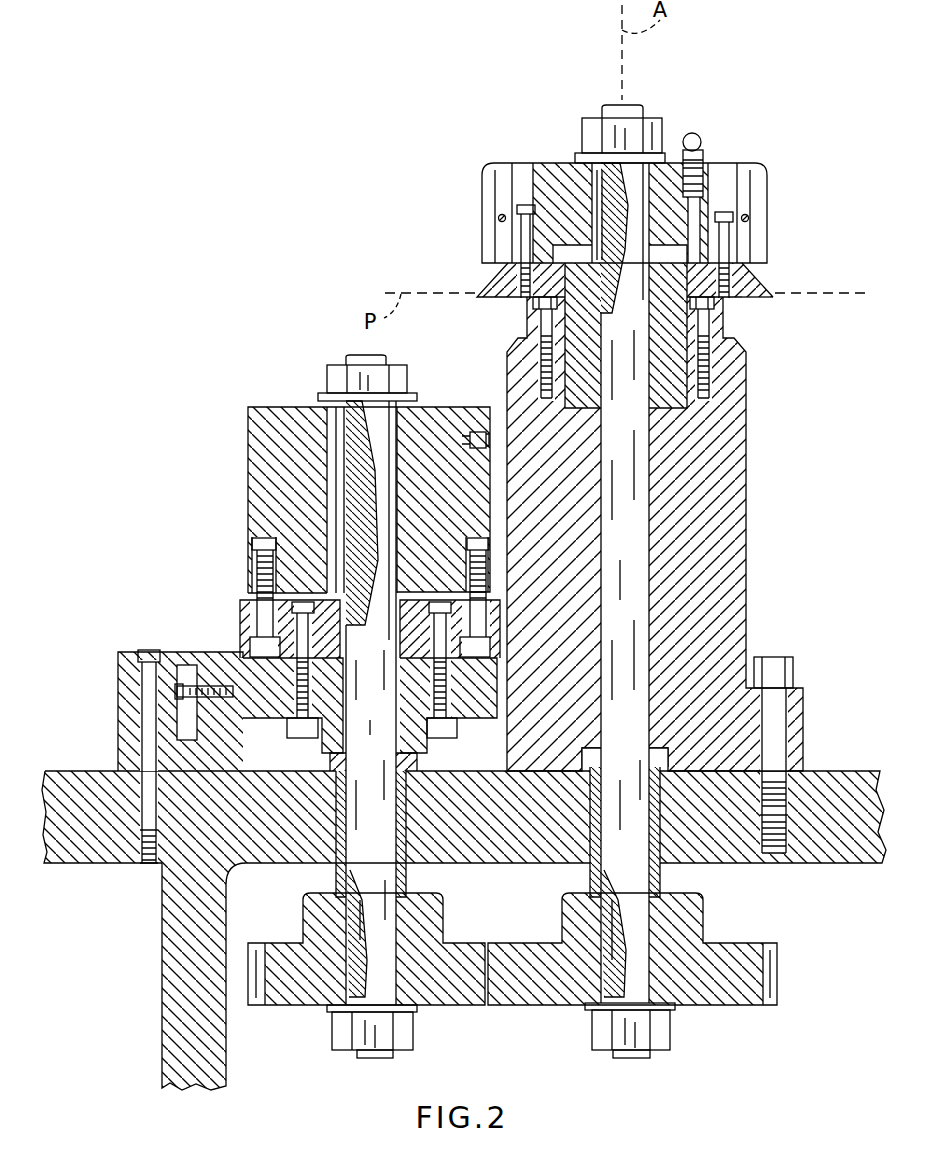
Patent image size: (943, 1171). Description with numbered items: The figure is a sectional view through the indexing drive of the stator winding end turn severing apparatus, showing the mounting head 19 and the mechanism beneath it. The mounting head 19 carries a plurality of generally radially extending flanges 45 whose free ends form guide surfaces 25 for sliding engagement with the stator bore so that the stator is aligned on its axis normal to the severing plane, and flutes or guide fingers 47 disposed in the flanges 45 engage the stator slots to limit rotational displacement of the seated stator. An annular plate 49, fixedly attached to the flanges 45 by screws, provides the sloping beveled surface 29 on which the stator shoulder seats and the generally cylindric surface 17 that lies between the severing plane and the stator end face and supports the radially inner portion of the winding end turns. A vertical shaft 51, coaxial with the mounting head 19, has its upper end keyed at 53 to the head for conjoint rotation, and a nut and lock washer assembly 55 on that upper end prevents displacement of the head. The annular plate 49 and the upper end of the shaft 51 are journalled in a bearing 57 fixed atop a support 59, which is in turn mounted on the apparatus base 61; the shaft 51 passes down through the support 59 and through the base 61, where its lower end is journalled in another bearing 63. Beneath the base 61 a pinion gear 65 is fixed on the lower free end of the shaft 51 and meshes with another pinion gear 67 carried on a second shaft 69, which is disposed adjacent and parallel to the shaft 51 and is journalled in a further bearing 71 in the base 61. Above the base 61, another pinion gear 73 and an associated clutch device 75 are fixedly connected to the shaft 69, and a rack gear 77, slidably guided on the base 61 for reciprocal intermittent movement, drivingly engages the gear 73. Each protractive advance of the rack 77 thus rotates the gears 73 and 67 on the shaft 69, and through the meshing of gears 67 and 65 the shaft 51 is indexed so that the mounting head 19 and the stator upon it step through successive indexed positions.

The cylindric surface 17 is at (477, 293).
The mounting head 19 is at (474, 162).
The guide surfaces 25 is at (490, 213).
The beveled surface 29 is at (768, 277).
The flanges 45 is at (553, 162).
The guide fingers 47 is at (483, 245).
The annular plate 49 is at (743, 295).
The shaft 51 is at (608, 611).
The key 53 is at (600, 208).
The nut and lock washer assembly 55 is at (639, 139).
The bearing 57 is at (722, 312).
The support 59 is at (745, 470).
The base 61 is at (825, 826).
The bearing 63 is at (592, 808).
The pinion gear 65 is at (536, 984).
The pinion gear 67 is at (427, 984).
The shaft 69 is at (356, 731).
The bearing 71 is at (337, 813).
The pinion gear 73 is at (266, 719).
The clutch device 75 is at (254, 451).
The rack gear 77 is at (240, 657).